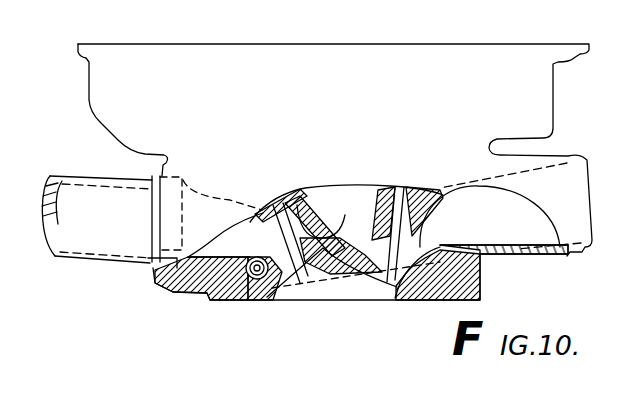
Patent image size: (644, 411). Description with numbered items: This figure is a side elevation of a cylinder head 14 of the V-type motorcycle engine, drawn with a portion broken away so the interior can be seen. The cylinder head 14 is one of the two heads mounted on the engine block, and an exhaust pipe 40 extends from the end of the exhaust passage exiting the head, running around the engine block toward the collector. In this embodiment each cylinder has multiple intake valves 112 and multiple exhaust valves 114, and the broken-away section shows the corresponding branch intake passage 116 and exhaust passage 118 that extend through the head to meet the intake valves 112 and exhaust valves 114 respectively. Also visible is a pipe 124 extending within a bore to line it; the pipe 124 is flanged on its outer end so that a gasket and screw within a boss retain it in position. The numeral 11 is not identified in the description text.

The cylinder head 14 is at (553, 95).
The exhaust pipe 40 is at (103, 262).
The valve body 11 is at (330, 207).
The exhaust passage 118 is at (200, 258).
The branch intake passage 116 is at (530, 247).
The pipe 124 is at (266, 285).
The exhaust valve 114 is at (318, 282).
The intake valve 112 is at (389, 280).